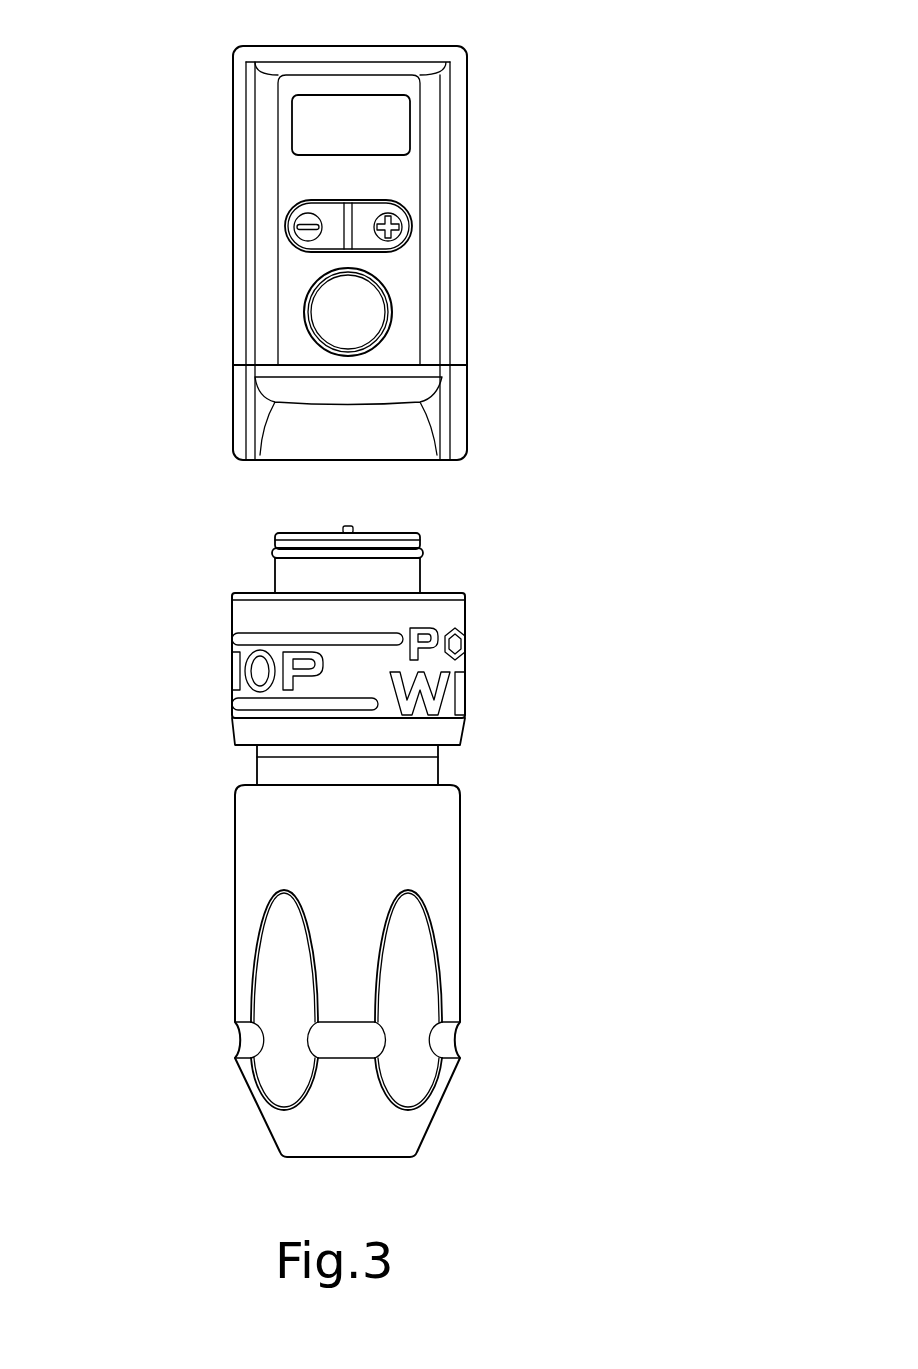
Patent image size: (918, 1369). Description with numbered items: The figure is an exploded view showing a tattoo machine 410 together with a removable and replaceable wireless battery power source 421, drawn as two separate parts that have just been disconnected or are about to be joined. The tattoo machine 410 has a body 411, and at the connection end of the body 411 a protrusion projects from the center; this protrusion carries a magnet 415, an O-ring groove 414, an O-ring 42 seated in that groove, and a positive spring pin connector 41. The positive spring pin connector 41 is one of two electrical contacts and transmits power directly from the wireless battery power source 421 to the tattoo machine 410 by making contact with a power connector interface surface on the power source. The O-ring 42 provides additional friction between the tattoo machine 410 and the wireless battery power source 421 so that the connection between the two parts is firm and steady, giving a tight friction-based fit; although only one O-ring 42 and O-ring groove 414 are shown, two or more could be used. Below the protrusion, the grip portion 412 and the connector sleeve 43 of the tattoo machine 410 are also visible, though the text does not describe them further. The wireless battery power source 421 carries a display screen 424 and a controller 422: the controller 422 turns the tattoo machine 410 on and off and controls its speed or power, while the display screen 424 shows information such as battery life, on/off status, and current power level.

The tattoo machine 410 is at (525, 796).
The body 411 is at (192, 672).
The grip 412 is at (189, 972).
The O-ring groove 414 is at (254, 553).
The magnet 415 is at (283, 533).
The positive spring pin connector 41 is at (353, 525).
The O-ring 42 is at (425, 558).
The connector sleeve 43 is at (425, 583).
The wireless battery power source 421 is at (505, 194).
The controller 422 is at (382, 245).
The display screen 424 is at (400, 132).